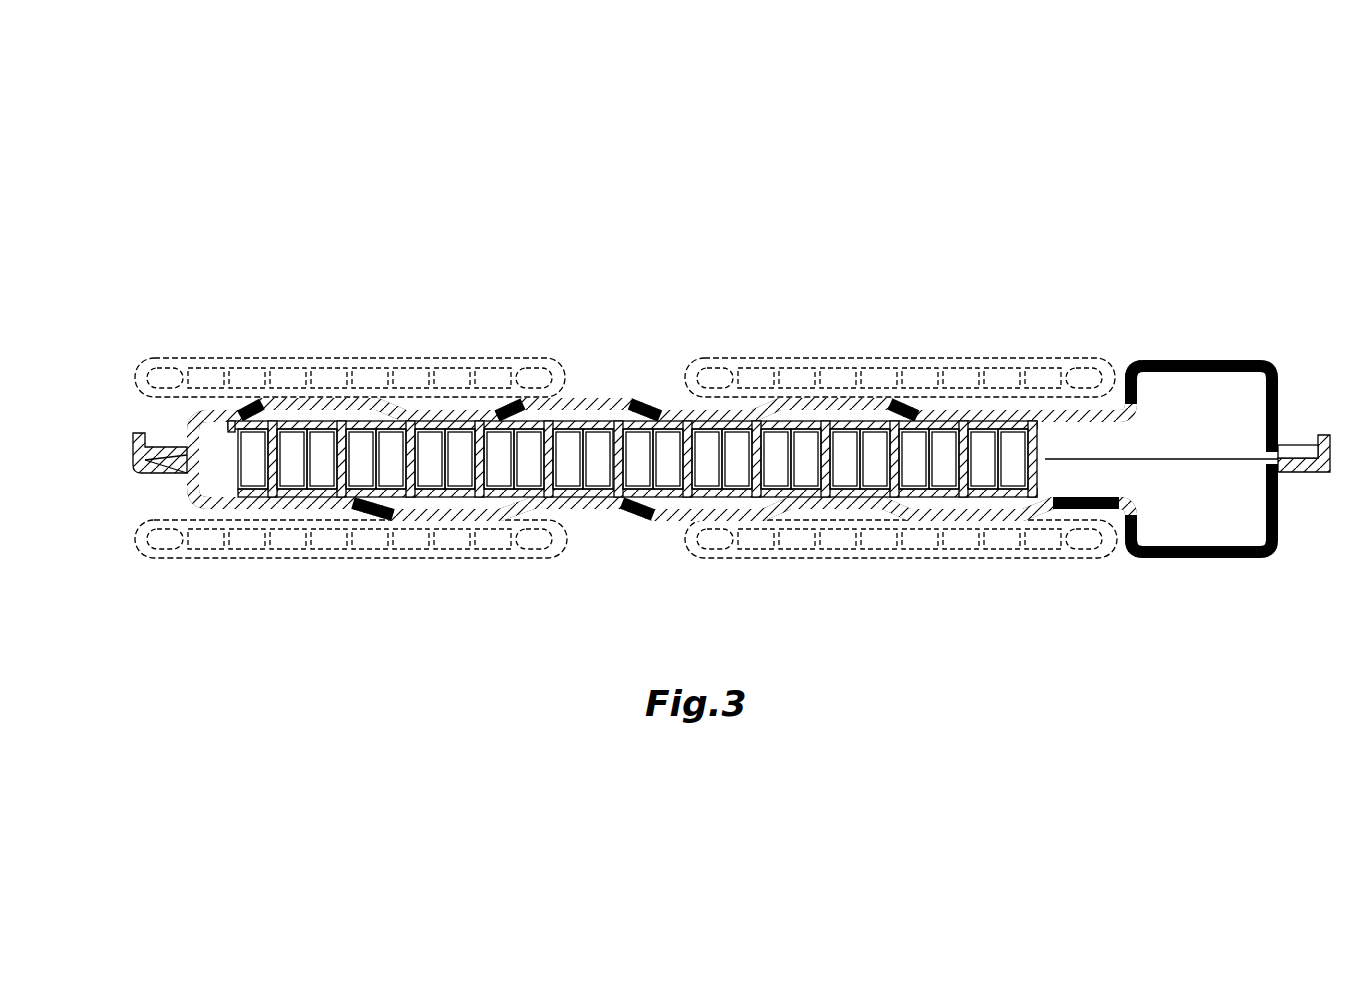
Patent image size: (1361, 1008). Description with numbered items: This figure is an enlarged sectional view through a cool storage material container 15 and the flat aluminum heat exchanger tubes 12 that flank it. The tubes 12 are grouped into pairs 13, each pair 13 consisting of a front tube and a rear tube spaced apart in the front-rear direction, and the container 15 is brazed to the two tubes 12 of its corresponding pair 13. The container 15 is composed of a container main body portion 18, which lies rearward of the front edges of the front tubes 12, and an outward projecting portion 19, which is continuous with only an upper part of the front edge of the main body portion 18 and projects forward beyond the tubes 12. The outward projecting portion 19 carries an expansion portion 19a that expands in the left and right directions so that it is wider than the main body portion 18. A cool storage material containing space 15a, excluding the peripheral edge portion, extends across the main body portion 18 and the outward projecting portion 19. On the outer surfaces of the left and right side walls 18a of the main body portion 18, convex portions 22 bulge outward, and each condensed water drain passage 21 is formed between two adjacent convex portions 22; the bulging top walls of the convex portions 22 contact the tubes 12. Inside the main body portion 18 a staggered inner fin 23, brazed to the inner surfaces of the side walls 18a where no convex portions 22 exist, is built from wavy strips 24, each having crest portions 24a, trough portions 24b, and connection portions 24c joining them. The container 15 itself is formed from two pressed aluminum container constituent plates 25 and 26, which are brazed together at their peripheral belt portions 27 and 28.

The heat exchanger tube 12 is at (150, 360).
The pair 13 is at (140, 364).
The cool storage material container 15 is at (1232, 275).
The cool storage material containing space 15a is at (1093, 424).
The container main body portion 18 is at (622, 583).
The side wall 18a is at (630, 404).
The outward projecting portion 19 is at (1320, 569).
The expansion portion 19a is at (1178, 360).
The condensed water drain passage 21 is at (412, 428).
The convex portion 22 is at (278, 402).
The inner fin 23 is at (1068, 447).
The wavy strip 24 is at (632, 473).
The crest portion 24a is at (390, 499).
The trough portion 24b is at (455, 422).
The connection portion 24c is at (498, 470).
The container constituent plate 25 is at (153, 482).
The container constituent plate 26 is at (153, 433).
The peripheral belt portion 27 is at (1292, 473).
The peripheral belt portion 28 is at (1300, 447).